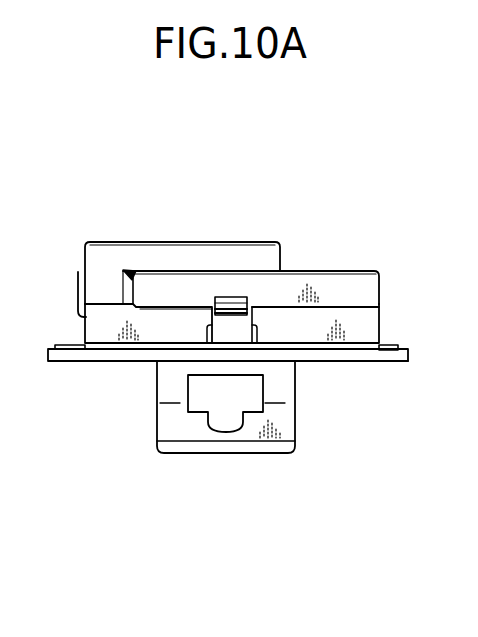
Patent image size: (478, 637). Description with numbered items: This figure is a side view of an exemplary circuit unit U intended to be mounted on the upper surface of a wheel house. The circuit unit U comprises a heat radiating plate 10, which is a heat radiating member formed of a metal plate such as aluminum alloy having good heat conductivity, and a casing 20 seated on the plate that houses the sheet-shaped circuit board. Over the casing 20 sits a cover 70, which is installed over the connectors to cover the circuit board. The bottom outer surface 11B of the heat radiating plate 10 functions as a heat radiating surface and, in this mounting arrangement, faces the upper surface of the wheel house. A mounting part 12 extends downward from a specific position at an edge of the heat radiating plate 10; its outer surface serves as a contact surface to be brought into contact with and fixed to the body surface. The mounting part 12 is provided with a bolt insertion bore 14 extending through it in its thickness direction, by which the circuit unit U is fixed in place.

The circuit unit U is at (380, 239).
The cover 70 is at (319, 280).
The casing 20 is at (368, 323).
The heat radiating plate 10 is at (395, 362).
The outer surface 11B is at (342, 363).
The mounting part 12 is at (262, 443).
The bolt insertion bore 14 is at (217, 420).